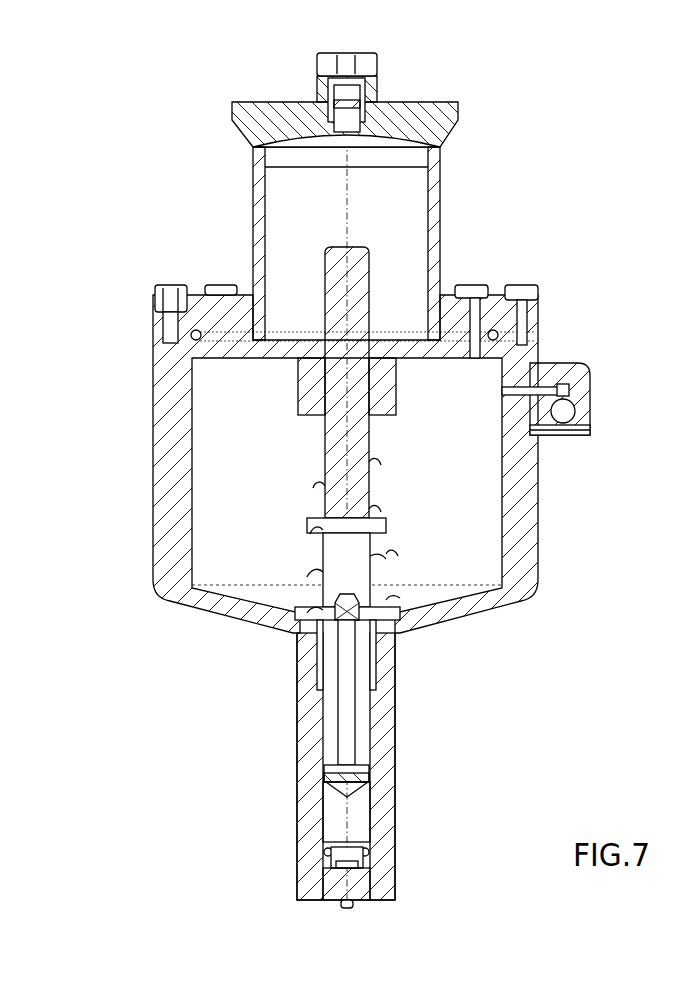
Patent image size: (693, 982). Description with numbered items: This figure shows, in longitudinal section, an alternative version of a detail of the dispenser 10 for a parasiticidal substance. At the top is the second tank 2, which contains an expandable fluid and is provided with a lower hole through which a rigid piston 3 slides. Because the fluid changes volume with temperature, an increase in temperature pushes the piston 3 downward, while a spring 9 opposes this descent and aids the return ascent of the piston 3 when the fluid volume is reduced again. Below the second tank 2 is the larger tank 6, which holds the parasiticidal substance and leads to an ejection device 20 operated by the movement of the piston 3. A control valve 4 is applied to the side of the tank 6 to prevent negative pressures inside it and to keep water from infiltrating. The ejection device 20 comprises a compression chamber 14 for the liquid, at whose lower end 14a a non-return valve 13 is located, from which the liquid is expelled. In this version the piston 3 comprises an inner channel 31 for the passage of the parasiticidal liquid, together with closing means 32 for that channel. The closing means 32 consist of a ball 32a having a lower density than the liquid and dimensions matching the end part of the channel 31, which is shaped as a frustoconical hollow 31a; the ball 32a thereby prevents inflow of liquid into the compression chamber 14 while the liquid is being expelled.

The dispenser 10 is at (484, 165).
The second tank 2 is at (282, 212).
The rigid piston 3 is at (362, 292).
The control valve 4 is at (590, 398).
The tank 6 is at (215, 445).
The spring 9 is at (383, 558).
The ejection device 20 is at (405, 713).
The inner channel 31 is at (340, 670).
The frustoconical hollow 31a is at (333, 777).
The closing means 32 is at (295, 749).
The ball 32a is at (352, 786).
The compression chamber 14 is at (338, 808).
The lower end 14a is at (410, 872).
The non-return valve 13 is at (333, 885).